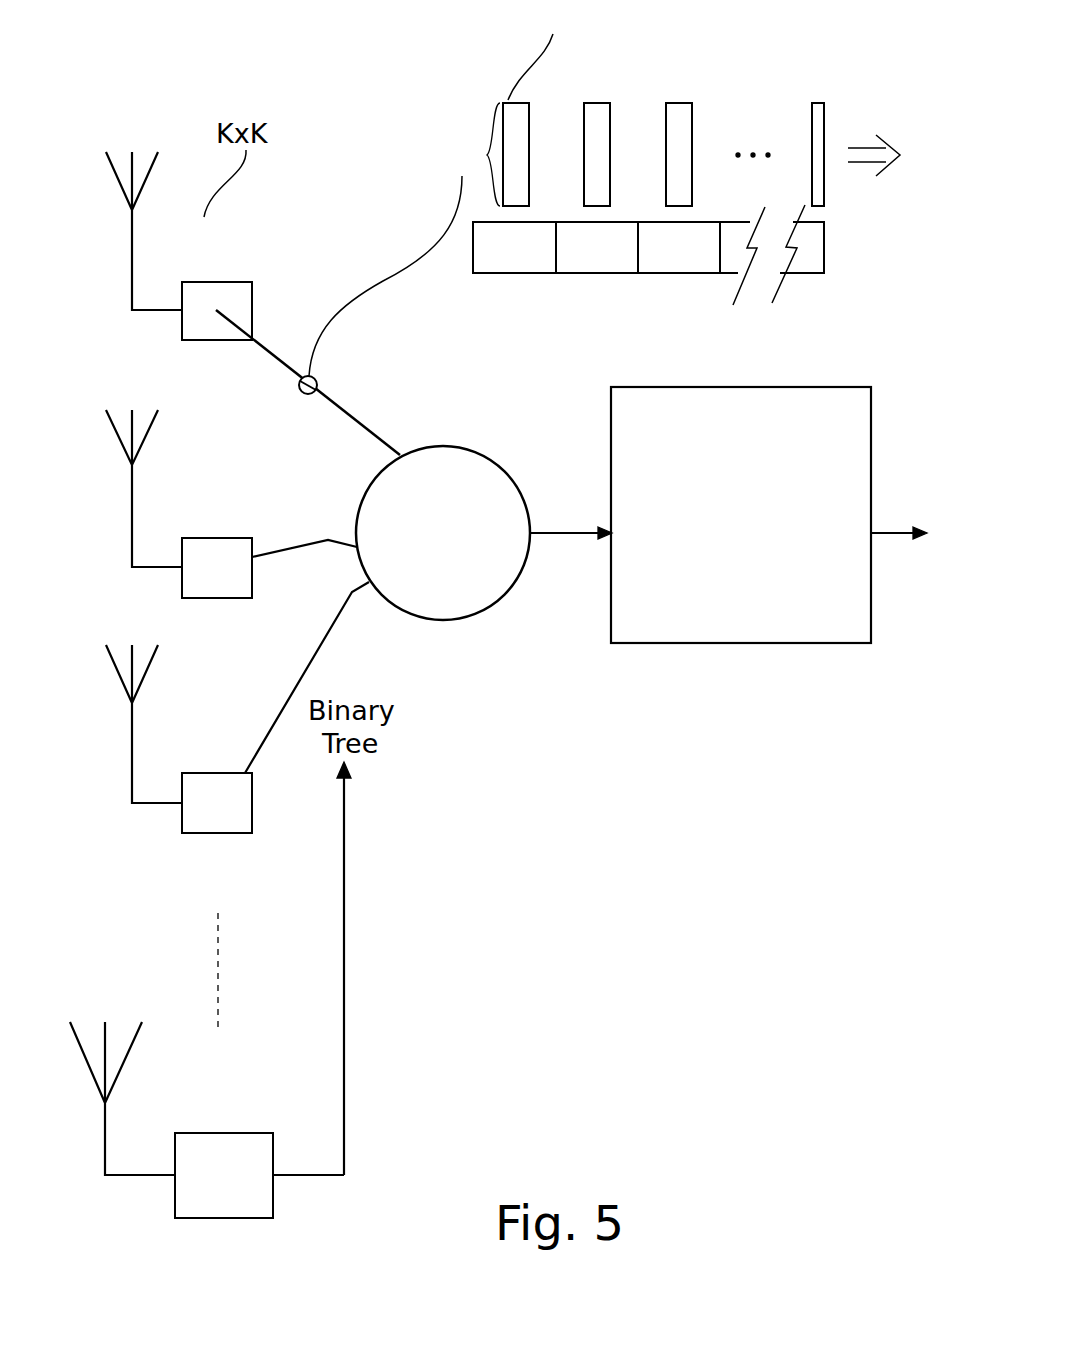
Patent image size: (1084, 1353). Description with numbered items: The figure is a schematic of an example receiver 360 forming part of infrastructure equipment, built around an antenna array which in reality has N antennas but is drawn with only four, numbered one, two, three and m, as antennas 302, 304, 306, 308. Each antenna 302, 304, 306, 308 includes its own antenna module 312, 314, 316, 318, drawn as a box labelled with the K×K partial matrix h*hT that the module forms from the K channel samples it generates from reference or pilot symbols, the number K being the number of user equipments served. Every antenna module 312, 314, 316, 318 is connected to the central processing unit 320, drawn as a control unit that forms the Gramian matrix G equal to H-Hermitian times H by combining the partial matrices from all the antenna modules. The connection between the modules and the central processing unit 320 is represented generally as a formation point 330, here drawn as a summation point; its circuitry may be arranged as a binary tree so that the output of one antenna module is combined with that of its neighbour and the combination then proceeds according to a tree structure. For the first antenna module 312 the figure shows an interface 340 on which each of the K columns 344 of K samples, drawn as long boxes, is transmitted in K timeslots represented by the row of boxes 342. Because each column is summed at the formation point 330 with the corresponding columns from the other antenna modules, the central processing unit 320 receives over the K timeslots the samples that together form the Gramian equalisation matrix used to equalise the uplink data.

The antenna 302 is at (130, 265).
The antenna 304 is at (130, 525).
The antenna 306 is at (130, 747).
The antenna 308 is at (103, 1148).
The antenna module 312 is at (254, 296).
The antenna module 314 is at (218, 600).
The antenna module 316 is at (218, 835).
The antenna module 318 is at (225, 1220).
The central processing unit 320 is at (735, 645).
The formation point 330 is at (477, 450).
The interface 340 is at (376, 430).
The boxes 342 is at (824, 248).
The columns 344 is at (531, 100).
The receiver system 360 is at (135, 116).